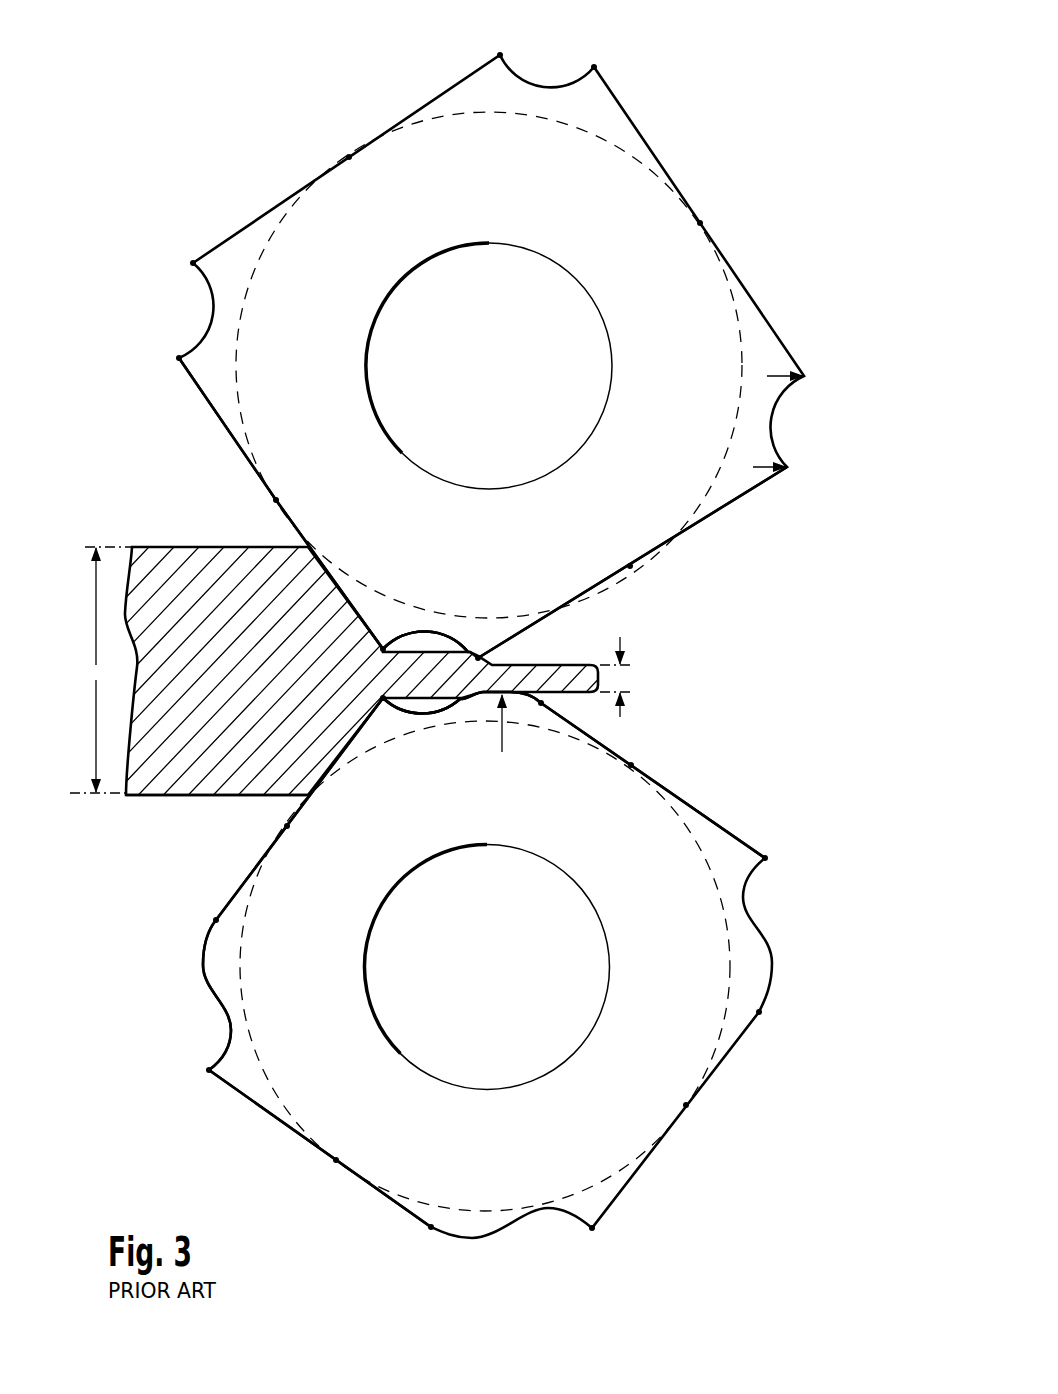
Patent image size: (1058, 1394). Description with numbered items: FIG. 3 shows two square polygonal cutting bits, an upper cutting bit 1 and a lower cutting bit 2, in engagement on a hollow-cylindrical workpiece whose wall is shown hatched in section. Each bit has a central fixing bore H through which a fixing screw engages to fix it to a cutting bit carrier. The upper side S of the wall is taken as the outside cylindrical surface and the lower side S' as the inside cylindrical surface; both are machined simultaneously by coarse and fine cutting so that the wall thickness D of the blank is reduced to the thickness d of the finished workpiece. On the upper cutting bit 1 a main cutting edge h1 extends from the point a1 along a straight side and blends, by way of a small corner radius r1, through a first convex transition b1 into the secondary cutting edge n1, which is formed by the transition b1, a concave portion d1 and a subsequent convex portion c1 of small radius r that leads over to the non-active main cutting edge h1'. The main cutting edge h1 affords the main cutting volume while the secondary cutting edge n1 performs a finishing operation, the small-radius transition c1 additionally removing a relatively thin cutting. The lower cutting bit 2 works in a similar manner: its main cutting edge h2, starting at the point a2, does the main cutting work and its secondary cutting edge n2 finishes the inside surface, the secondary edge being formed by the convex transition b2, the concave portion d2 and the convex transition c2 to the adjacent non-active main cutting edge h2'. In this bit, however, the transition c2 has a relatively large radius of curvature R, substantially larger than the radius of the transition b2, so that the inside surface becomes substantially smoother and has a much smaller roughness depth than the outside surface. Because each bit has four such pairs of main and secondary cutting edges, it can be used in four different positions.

The upper cutting bit 1 is at (731, 179).
The lower cutting bit 2 is at (756, 766).
The central fixing bore H is at (608, 338).
The upper side S is at (365, 639).
The lower side S' is at (207, 819).
The wall thickness of the blank D is at (102, 670).
The wall thickness of the finished workpiece d is at (620, 680).
The radius of curvature of the convex portion c1 r is at (767, 376).
The corner radius r1 is at (753, 467).
The point a1 is at (274, 501).
The first convex transition b1 is at (383, 646).
The convex transition c1 is at (478, 657).
The concave portion d1 is at (420, 632).
The secondary cutting edge n1 is at (468, 649).
The main cutting edge h1 is at (281, 503).
The non-active main cutting portion h1' is at (632, 562).
The point a2 is at (285, 827).
The convex transition b2 is at (383, 701).
The convex transition c2 is at (541, 705).
The concave portion d2 is at (427, 718).
The secondary cutting edge n2 is at (466, 699).
The main cutting edge h2 is at (320, 962).
The non-active main cutting edge h2' is at (653, 779).
The radius of the convex transition c2 R is at (505, 717).